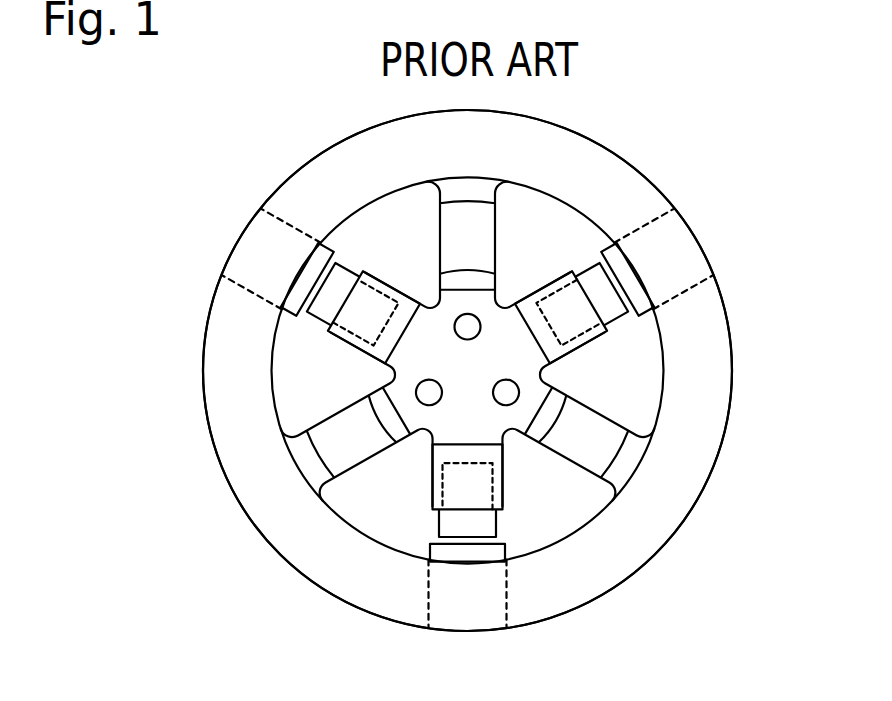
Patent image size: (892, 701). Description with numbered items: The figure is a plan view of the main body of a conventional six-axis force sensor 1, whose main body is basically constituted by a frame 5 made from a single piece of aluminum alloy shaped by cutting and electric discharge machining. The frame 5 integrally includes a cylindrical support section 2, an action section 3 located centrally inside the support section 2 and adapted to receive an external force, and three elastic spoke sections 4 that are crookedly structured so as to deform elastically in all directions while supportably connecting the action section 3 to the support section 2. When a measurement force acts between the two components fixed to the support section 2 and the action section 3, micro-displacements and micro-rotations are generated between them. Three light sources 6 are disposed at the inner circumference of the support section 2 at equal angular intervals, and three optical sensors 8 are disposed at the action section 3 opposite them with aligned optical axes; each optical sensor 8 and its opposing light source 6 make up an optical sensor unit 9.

The six-axis force sensor 1 is at (708, 167).
The support section 2 is at (640, 553).
The action section 3 is at (548, 373).
The elastic spoke sections 4 is at (490, 236).
The frame 5 is at (742, 386).
The light sources 6 is at (606, 250).
The optical sensors 8 is at (609, 318).
The optical sensor unit 9 is at (590, 244).